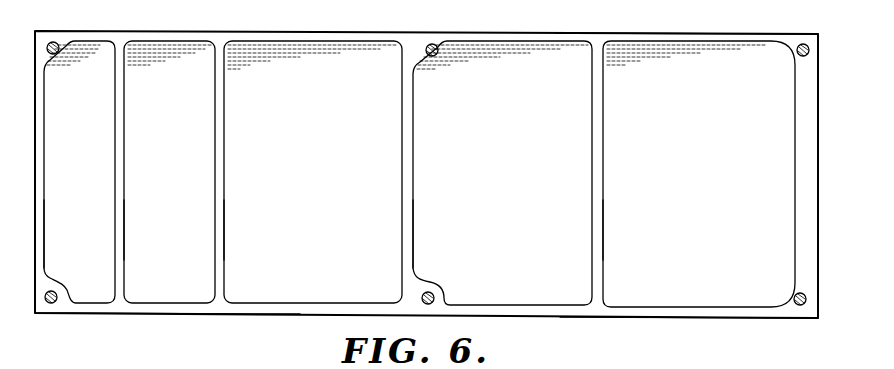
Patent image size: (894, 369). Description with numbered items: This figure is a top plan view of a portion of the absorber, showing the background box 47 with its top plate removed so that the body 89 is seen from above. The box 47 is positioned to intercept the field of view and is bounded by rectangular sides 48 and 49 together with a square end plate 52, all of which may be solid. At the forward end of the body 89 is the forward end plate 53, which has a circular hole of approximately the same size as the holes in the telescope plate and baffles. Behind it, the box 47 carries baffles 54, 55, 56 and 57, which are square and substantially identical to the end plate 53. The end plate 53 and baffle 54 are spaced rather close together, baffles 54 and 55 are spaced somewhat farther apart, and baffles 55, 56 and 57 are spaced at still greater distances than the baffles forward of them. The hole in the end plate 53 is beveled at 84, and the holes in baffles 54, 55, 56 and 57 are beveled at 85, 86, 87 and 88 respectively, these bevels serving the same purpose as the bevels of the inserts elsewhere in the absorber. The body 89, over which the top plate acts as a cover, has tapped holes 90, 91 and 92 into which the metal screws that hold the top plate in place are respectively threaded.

The background box 47 is at (834, 116).
The rectangular side 48 is at (553, 33).
The rectangular side 49 is at (601, 318).
The square end plate 52 is at (805, 173).
The forward end plate 53 is at (38, 116).
The baffle 54 is at (118, 116).
The baffle 55 is at (218, 116).
The baffle 56 is at (407, 116).
The baffle 57 is at (597, 116).
The bevel 84 is at (38, 230).
The bevel 85 is at (118, 230).
The bevel 86 is at (218, 230).
The bevel 87 is at (407, 230).
The bevel 88 is at (597, 230).
The body 89 is at (290, 320).
The tapped hole 90 is at (57, 42).
The tapped hole 91 is at (800, 43).
The tapped hole 92 is at (437, 44).